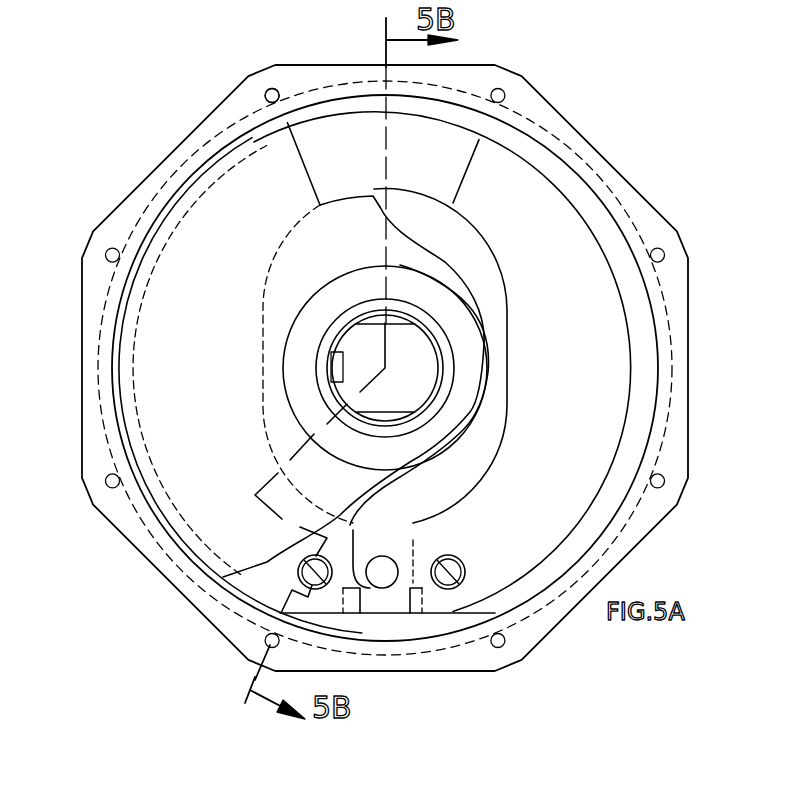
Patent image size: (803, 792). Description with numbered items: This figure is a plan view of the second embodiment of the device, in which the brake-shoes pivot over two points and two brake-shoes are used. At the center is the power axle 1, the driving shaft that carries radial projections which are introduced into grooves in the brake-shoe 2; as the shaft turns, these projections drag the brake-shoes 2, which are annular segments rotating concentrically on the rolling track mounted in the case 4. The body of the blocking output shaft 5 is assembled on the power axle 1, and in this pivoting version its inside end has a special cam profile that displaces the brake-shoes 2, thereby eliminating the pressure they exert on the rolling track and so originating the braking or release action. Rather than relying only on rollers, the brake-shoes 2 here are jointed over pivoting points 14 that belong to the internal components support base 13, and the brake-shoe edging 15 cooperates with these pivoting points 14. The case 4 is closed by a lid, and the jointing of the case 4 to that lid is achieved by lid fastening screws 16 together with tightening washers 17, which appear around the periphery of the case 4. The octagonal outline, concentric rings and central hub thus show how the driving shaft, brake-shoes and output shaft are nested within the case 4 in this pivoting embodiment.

The power axle 1 is at (360, 343).
The brake-shoe 2 is at (530, 225).
The case 4 is at (190, 148).
The blocking output shaft 5 is at (457, 242).
The internal components support base 13 is at (457, 116).
The pivoting point 14 is at (455, 578).
The brake-shoe edging 15 is at (438, 148).
The lid fastening screw 16 is at (268, 90).
The tightening washer 17 is at (258, 100).